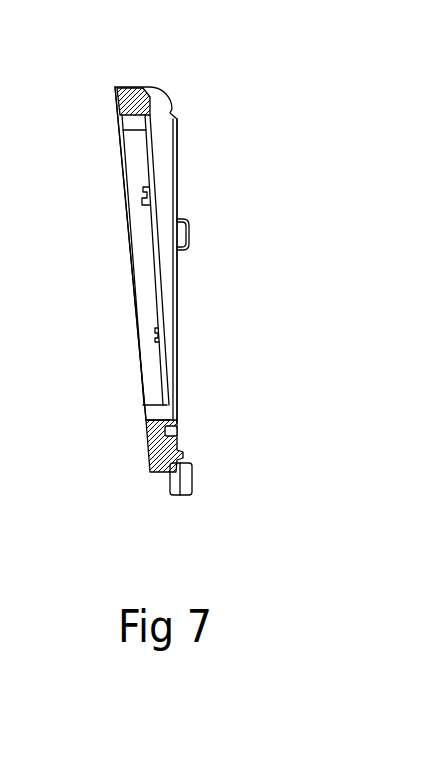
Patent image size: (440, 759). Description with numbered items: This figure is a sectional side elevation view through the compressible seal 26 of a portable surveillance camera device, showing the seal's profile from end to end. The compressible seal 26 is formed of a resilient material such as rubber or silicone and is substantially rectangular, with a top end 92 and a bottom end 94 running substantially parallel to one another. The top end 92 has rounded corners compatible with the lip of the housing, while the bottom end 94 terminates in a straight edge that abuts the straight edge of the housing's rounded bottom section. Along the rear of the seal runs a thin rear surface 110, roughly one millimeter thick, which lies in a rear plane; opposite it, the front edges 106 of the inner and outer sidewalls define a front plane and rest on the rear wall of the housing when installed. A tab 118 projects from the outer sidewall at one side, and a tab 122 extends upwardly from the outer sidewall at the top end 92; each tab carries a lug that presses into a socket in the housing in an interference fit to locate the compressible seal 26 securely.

The compressible seal 26 is at (174, 101).
The bottom end 94 is at (120, 93).
The front edges 106 is at (127, 237).
The rear surface 110 is at (177, 180).
The tab 118 is at (187, 228).
The top end 92 is at (160, 478).
The tab 122 is at (175, 495).